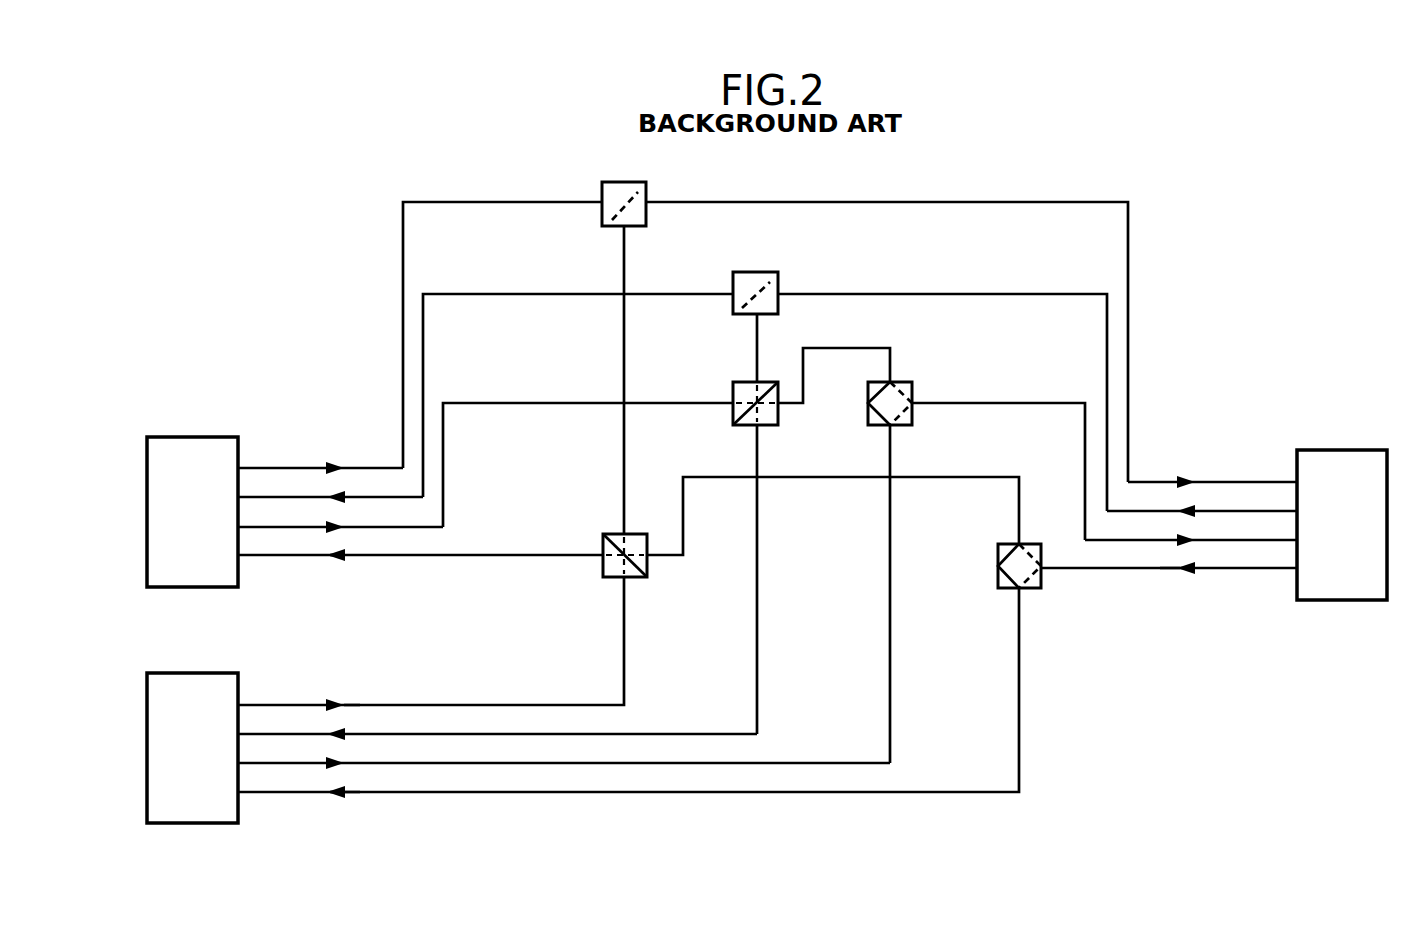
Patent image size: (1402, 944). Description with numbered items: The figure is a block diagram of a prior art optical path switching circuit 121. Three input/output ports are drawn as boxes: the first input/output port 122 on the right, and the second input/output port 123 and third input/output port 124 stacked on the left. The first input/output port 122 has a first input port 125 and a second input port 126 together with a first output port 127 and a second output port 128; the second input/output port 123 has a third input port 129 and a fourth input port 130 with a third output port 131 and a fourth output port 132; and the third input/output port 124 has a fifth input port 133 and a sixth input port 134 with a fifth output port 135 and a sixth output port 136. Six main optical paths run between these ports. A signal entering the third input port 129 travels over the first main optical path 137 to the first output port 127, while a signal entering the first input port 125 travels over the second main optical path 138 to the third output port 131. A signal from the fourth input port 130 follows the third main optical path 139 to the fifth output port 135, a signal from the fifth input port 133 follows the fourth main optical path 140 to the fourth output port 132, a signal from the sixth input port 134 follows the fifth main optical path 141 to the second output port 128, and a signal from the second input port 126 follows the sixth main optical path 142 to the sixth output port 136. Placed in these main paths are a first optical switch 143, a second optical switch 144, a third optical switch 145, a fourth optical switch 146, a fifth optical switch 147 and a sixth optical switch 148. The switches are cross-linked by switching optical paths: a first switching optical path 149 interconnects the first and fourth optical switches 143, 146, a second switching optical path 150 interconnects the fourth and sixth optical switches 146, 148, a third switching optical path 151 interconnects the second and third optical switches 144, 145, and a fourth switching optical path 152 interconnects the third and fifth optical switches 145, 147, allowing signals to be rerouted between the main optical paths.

The optical path switching circuit 121 is at (1210, 141).
The first input/output port 122 is at (1350, 450).
The second input/output port 123 is at (197, 437).
The third input/output port 124 is at (197, 673).
The first input port 125 is at (1295, 508).
The second input port 126 is at (1295, 566).
The first output port 127 is at (1295, 479).
The second output port 128 is at (1295, 537).
The third input port 129 is at (240, 467).
The fourth input port 130 is at (240, 526).
The third output port 131 is at (240, 496).
The fourth output port 132 is at (240, 554).
The fifth input port 133 is at (240, 704).
The sixth input port 134 is at (240, 762).
The fifth output port 135 is at (240, 733).
The sixth output port 136 is at (240, 791).
The first main optical path 137 is at (493, 202).
The second main optical path 138 is at (493, 294).
The third main optical path 139 is at (493, 403).
The fourth main optical path 140 is at (512, 555).
The fifth main optical path 141 is at (1020, 403).
The sixth main optical path 142 is at (1090, 568).
The first optical switch 143 is at (630, 182).
The second optical switch 144 is at (760, 272).
The third optical switch 145 is at (746, 382).
The fourth optical switch 146 is at (640, 534).
The fifth optical switch 147 is at (897, 382).
The sixth optical switch 148 is at (1028, 544).
The first switching optical path 149 is at (626, 354).
The second switching optical path 150 is at (833, 478).
The third switching optical path 151 is at (759, 329).
The fourth switching optical path 152 is at (870, 348).